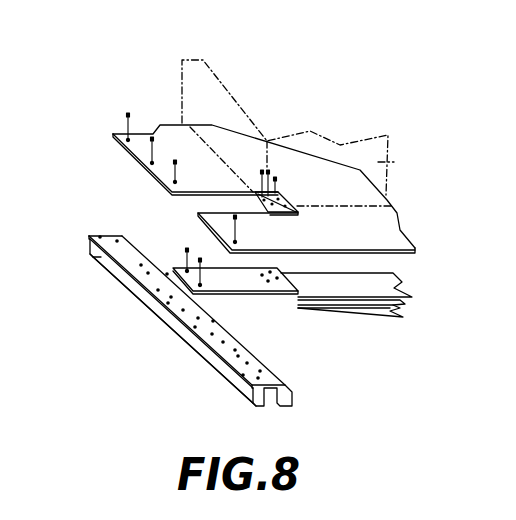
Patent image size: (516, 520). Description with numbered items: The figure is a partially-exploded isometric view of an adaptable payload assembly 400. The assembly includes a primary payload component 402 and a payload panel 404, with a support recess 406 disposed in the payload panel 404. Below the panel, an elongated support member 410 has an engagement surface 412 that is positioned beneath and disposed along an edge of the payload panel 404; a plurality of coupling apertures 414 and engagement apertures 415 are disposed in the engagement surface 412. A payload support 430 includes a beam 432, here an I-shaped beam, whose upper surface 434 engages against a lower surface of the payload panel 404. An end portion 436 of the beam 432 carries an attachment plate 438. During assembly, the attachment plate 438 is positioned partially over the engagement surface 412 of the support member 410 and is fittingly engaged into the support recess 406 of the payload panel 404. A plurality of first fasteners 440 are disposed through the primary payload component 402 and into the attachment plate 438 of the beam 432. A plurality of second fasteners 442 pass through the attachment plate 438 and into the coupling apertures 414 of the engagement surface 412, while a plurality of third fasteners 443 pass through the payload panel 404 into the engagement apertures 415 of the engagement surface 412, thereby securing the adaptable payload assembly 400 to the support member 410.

The adaptable payload assembly 400 is at (152, 64).
The primary payload component 402 is at (394, 167).
The payload panel 404 is at (170, 128).
The support recess 406 is at (209, 205).
The elongated support member 410 is at (168, 383).
The engagement surface 412 is at (285, 384).
The coupling apertures 414 is at (198, 319).
The engagement apertures 415 is at (167, 275).
The payload support 430 is at (367, 369).
The beam 432 is at (392, 318).
The upper surface 434 is at (401, 281).
The end portion 436 is at (286, 327).
The attachment plate 438 is at (228, 296).
The first fasteners 440 is at (278, 164).
The second fasteners 442 is at (176, 243).
The third fasteners 443 is at (175, 184).